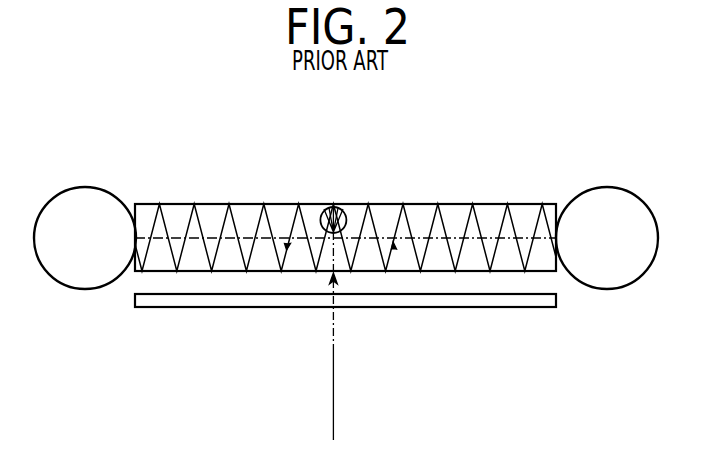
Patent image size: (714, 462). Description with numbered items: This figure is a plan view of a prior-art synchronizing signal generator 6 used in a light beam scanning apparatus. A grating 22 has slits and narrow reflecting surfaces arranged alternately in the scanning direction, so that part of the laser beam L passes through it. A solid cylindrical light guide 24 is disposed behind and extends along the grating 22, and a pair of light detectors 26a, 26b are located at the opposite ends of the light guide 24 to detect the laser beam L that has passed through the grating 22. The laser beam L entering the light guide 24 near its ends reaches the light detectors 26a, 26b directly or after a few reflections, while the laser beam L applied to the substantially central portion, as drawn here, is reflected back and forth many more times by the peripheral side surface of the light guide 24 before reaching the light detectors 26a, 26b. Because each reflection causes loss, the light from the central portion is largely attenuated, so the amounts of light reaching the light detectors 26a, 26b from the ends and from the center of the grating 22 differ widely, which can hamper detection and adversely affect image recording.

The synchronizing signal generator 6 is at (336, 176).
The grating 22 is at (450, 302).
The solid cylindrical light guide 24 is at (427, 207).
The light detector 26a is at (603, 210).
The light detector 26b is at (86, 210).
The laser beam L is at (332, 337).